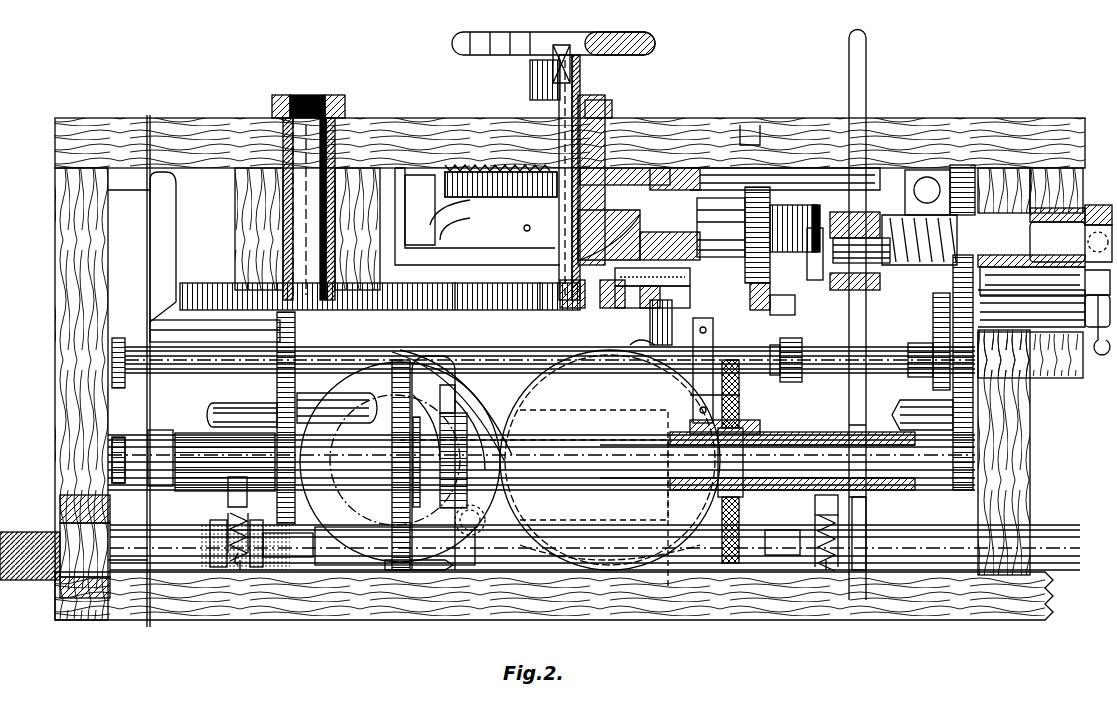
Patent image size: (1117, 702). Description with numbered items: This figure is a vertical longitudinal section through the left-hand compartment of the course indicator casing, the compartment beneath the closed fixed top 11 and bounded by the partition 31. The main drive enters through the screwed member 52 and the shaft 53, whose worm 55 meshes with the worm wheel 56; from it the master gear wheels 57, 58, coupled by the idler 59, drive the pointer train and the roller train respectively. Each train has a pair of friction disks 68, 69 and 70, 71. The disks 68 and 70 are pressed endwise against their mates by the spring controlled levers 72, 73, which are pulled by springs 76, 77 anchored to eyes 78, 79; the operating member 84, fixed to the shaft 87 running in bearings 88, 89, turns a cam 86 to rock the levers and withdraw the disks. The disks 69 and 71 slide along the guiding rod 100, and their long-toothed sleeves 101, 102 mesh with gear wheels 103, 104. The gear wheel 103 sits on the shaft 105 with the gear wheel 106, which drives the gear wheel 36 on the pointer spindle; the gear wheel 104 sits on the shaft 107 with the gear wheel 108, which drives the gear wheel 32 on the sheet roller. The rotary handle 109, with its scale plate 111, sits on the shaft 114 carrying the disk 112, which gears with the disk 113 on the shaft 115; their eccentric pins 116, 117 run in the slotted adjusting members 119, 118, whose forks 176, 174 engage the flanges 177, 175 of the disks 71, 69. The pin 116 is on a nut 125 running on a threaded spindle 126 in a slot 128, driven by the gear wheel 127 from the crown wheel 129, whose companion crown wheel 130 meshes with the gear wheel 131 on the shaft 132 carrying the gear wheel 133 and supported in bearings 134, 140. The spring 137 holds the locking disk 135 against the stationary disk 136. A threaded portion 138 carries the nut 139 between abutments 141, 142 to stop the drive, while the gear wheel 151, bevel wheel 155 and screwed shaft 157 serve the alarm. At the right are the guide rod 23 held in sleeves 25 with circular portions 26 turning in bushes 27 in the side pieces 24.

The closed fixed top 11 is at (163, 135).
The rectangular guide rod 23 is at (1098, 205).
The side pieces 24 is at (1040, 378).
The sleeve 25 is at (1098, 205).
The circular portion 26 is at (1057, 242).
The bush 27 is at (1055, 208).
The partition 31 is at (1025, 505).
The gear wheel 32 is at (935, 305).
The gear wheel 36 is at (1044, 300).
The screwed member 52 is at (18, 532).
The shaft 53 is at (175, 545).
The worm 55 is at (372, 565).
The worm wheel 56 is at (342, 492).
The master gear wheel 57 is at (378, 402).
The master gear wheel 58 is at (560, 565).
The idler 59 is at (462, 568).
The friction disk 68 is at (452, 372).
The friction disk 69 is at (435, 355).
The friction disk 70 is at (545, 392).
The friction disk 71 is at (738, 560).
The spring controlled lever 72 is at (228, 490).
The spring controlled lever 73 is at (845, 498).
The spring 76 is at (232, 558).
The spring 77 is at (850, 545).
The loop or eye 78 is at (240, 570).
The loop or eye 79 is at (824, 568).
The operating member 84 is at (866, 45).
The cam 86 is at (815, 505).
The shaft 87 is at (290, 557).
The bearing 88 is at (98, 546).
The bearing 89 is at (842, 520).
The guiding rod 100 is at (136, 475).
The extended sleeve 101 is at (172, 438).
The extended sleeve 102 is at (812, 432).
The gear wheel 103 is at (277, 387).
The gear wheel 104 is at (780, 393).
The shaft 105 is at (240, 415).
The gear wheel 106 is at (972, 410).
The shaft 107 is at (187, 360).
The gear wheel 108 is at (925, 345).
The rotary handle 109 is at (652, 50).
The scale plate 111 is at (408, 120).
The disk 112 is at (540, 298).
The disk 113 is at (196, 310).
The shaft 114 is at (605, 112).
The shaft 115 is at (345, 118).
The pin 116 is at (658, 345).
The pin 117 is at (285, 338).
The slotted adjusting member 118 is at (340, 320).
The slotted adjusting member 119 is at (725, 370).
The nut 125 is at (690, 278).
The threaded spindle 126 is at (690, 298).
The gear wheel 127 is at (615, 300).
The slot 128 is at (630, 345).
The crown wheel 129 is at (470, 296).
The crown wheel 130 is at (625, 235).
The gear wheel 131 is at (655, 215).
The shaft 132 is at (690, 190).
The gear wheel 133 is at (955, 175).
The bearing 134 is at (428, 228).
The locking disk 135 is at (505, 185).
The stationary disk 136 is at (482, 167).
The spring 137 is at (535, 98).
The threaded portion 138 is at (812, 270).
The nut 139 is at (790, 300).
The bearing 140 is at (760, 150).
The abutment 141 is at (740, 187).
The abutment 142 is at (835, 212).
The gear wheel 151 is at (745, 125).
The bevel wheel 155 is at (888, 130).
The screwed shaft 157 is at (925, 180).
The fork 174 is at (455, 380).
The flanges 175 is at (460, 398).
The fork 176 is at (700, 400).
The flanges 177 is at (640, 470).